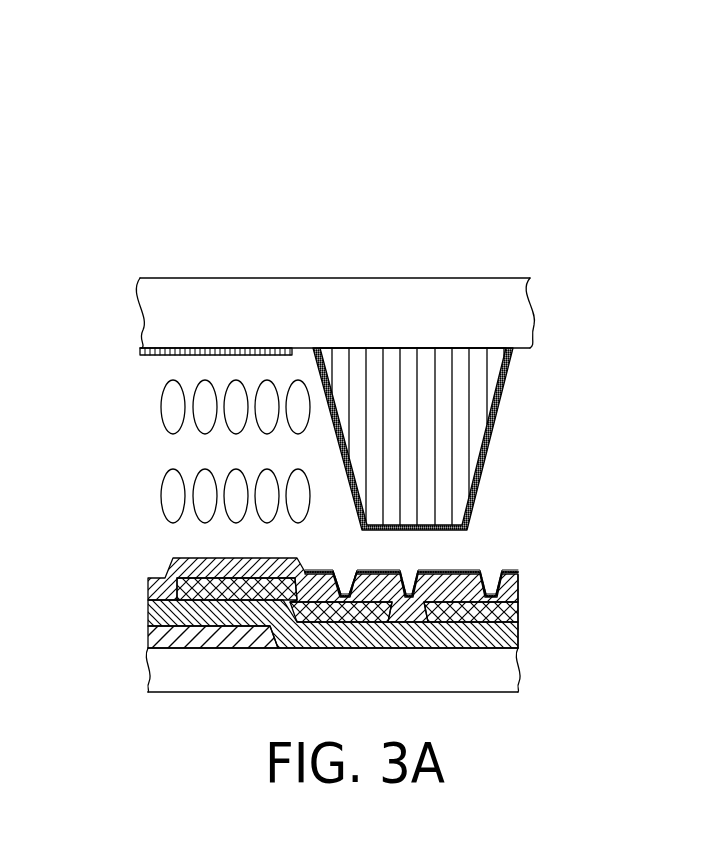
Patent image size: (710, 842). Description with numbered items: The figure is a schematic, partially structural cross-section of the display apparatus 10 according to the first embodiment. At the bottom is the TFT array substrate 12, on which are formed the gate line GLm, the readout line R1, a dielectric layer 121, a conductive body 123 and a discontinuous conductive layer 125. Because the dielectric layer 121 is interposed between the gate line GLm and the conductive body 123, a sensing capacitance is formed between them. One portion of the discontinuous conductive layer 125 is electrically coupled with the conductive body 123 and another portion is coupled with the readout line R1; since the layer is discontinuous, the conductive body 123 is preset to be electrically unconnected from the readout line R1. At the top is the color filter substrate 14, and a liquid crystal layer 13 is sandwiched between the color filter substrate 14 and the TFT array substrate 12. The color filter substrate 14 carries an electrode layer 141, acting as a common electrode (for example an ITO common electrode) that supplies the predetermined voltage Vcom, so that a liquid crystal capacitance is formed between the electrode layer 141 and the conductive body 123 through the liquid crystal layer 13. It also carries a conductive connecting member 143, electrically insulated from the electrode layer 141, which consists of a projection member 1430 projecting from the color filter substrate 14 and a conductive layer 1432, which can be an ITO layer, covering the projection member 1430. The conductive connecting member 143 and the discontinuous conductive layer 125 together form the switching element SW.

The display apparatus 10 is at (368, 243).
The TFT array substrate 12 is at (560, 655).
The dielectric layer 121 is at (157, 607).
The conductive body 123 is at (155, 583).
The discontinuous conductive layer 125 is at (477, 567).
The liquid crystal layer 13 is at (158, 449).
The color filter substrate 14 is at (563, 305).
The electrode layer 141 is at (140, 356).
The conductive connecting member 143 is at (481, 439).
The projection member 1430 is at (484, 405).
The conductive layer 1432 is at (490, 440).
The gate line GLm is at (157, 636).
The readout line R1 is at (519, 607).
The switching element SW is at (653, 402).